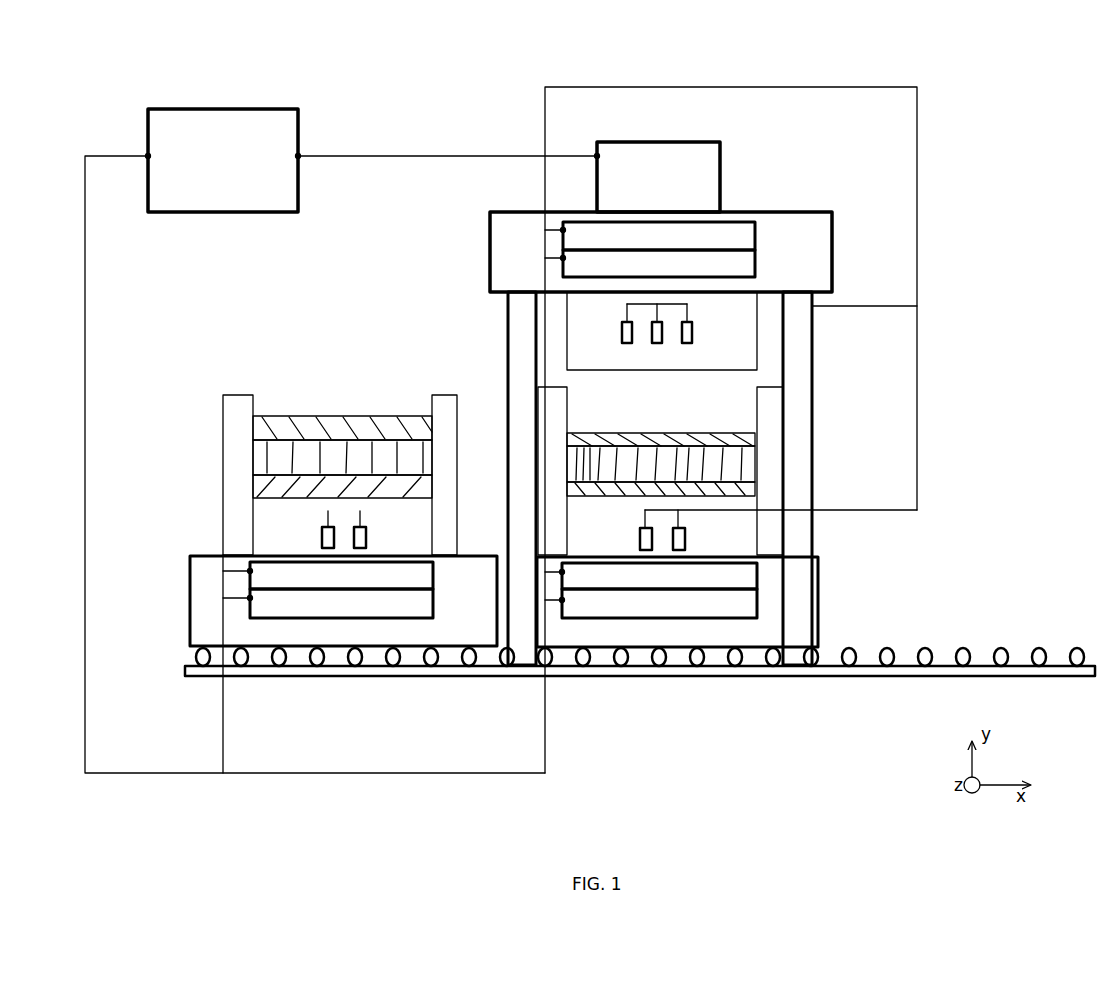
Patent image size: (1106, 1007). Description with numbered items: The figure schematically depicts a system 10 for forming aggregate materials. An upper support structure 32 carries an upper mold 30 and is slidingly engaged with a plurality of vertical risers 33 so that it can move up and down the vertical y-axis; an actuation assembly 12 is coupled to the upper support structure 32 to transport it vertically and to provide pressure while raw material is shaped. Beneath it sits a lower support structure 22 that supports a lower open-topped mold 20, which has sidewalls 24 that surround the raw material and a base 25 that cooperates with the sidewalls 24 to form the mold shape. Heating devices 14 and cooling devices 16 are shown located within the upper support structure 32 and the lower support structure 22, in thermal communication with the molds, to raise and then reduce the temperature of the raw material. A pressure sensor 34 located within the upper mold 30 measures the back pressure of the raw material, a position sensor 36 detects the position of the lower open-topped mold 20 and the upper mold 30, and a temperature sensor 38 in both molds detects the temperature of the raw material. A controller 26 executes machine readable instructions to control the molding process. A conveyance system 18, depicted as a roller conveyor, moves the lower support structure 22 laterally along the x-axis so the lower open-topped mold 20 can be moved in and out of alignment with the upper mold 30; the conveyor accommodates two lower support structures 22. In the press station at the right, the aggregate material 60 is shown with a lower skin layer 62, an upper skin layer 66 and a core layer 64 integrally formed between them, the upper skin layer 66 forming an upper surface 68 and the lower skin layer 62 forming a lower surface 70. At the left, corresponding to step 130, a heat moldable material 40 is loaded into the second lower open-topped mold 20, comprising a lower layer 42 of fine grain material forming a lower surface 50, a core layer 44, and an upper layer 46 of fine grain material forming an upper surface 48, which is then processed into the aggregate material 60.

The system 10 is at (1047, 97).
The actuation assembly 12 is at (700, 150).
The heating devices 14 is at (756, 236).
The cooling devices 16 is at (756, 266).
The conveyance system 18 is at (956, 645).
The lower open-topped mold 20 is at (770, 505).
The lower support structure 22 is at (205, 578).
The sidewalls 24 is at (775, 412).
The base 25 is at (757, 520).
The controller 26 is at (262, 117).
The upper mold 30 is at (758, 349).
The upper support structure 32 is at (834, 207).
The vertical risers 33 is at (815, 302).
The pressure sensor 34 is at (693, 333).
The position sensor 36 is at (657, 345).
The temperature sensor 38 is at (620, 333).
The heat moldable material 40 is at (329, 448).
The lower layer 42 is at (405, 480).
The core layer 44 is at (258, 460).
The upper layer 46 is at (263, 420).
The upper surface 48 is at (312, 416).
The lower surface 50 is at (385, 500).
The aggregate material 60 is at (649, 454).
The lower skin layer 62 is at (713, 484).
The core layer 64 is at (572, 468).
The upper skin layer 66 is at (727, 444).
The upper surface 68 is at (607, 433).
The lower surface 70 is at (604, 496).
The step 130 is at (211, 387).